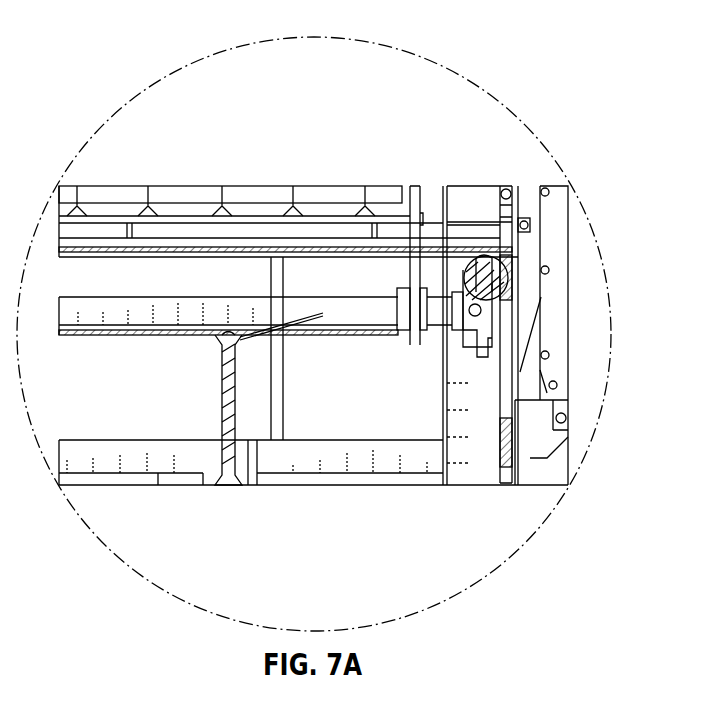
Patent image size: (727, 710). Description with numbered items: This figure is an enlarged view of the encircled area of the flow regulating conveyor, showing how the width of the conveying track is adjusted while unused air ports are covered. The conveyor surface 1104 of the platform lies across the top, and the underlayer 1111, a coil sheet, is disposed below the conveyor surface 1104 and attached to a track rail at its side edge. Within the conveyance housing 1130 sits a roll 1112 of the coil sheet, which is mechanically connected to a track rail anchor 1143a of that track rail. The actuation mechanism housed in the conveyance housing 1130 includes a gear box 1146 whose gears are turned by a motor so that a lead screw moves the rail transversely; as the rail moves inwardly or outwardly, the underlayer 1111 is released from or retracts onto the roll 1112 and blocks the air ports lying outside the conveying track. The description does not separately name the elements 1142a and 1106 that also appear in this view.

The conveyor surface 1104 is at (262, 207).
The underlayer 1111 is at (402, 258).
The shaft 1142a is at (412, 188).
The track rail anchor 1143a is at (513, 262).
The roll 1112 is at (510, 275).
The support column 1106 is at (292, 333).
The gear box 1146 is at (358, 310).
The conveyance housing 1130 is at (547, 472).